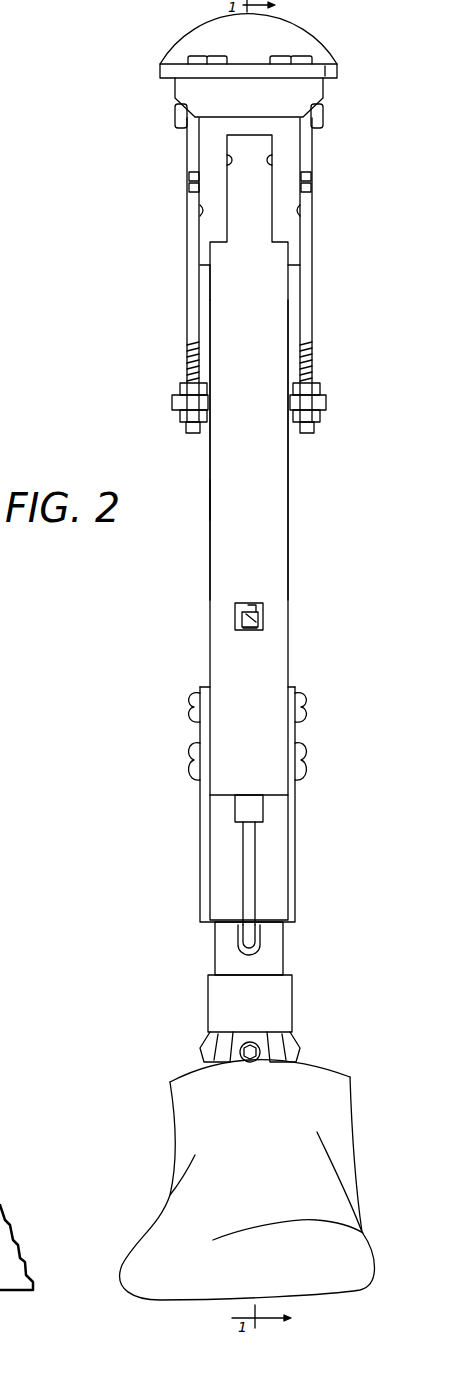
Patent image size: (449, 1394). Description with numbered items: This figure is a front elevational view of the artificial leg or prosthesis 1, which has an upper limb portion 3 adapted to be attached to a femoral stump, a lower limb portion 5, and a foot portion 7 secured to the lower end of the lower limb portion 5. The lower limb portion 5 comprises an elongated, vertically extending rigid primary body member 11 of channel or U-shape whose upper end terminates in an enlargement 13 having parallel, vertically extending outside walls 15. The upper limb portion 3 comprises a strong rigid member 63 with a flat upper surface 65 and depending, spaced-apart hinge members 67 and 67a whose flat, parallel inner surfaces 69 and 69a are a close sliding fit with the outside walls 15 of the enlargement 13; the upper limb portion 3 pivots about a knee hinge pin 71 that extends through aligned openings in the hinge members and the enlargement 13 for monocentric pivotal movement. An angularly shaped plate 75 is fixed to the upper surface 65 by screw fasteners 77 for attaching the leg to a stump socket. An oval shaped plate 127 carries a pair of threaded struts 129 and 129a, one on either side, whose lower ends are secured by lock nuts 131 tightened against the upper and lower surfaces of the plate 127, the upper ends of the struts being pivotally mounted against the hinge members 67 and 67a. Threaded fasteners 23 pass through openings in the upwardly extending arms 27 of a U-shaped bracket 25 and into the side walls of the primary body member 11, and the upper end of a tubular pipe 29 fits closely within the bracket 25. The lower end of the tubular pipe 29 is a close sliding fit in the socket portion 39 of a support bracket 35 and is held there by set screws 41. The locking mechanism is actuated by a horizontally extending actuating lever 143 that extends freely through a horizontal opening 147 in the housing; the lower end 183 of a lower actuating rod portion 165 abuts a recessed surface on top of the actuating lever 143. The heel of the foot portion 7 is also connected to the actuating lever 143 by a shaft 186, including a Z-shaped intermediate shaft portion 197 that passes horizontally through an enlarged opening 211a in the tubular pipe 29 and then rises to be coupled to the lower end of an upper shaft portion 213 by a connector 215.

The artificial leg or prosthesis 1 is at (185, 275).
The upper limb portion 3 is at (190, 50).
The lower limb portion 5 is at (207, 505).
The foot portion 7 is at (170, 1097).
The primary body member 11 is at (257, 445).
The enlargement 13 is at (233, 137).
The outside walls 15 is at (215, 230).
The threaded fasteners 23 is at (190, 748).
The U-shaped bracket 25 is at (290, 845).
The upwardly extending arms 27 is at (200, 688).
The tubular pipe 29 is at (273, 962).
The support bracket 35 is at (200, 1048).
The socket portion 39 is at (257, 1018).
The set screws 41 is at (250, 1062).
The rigid member 63 is at (257, 110).
The flat upper surface 65 is at (160, 68).
The hinge member 67 is at (300, 210).
The hinge member 67a is at (200, 210).
The inner surface 69 is at (268, 165).
The inner surface 69a is at (228, 160).
The knee hinge pin 71 is at (190, 183).
The angularly shaped plate 75 is at (325, 80).
The screw fasteners 77 is at (290, 56).
The oval shaped plate 127 is at (172, 402).
The threaded strut 129 is at (303, 293).
The threaded strut 129a is at (195, 303).
The lock nuts 131 is at (182, 385).
The actuating lever 143 is at (243, 620).
The horizontal opening 147 is at (258, 606).
The lower actuating rod portion 165 is at (248, 604).
The lower end 183 is at (258, 620).
The shaft 186 is at (257, 894).
The Z-shaped intermediate shaft portion 197 is at (245, 840).
The enlarged opening 211a is at (240, 957).
The upper shaft portion 213 is at (248, 628).
The connector 215 is at (255, 812).